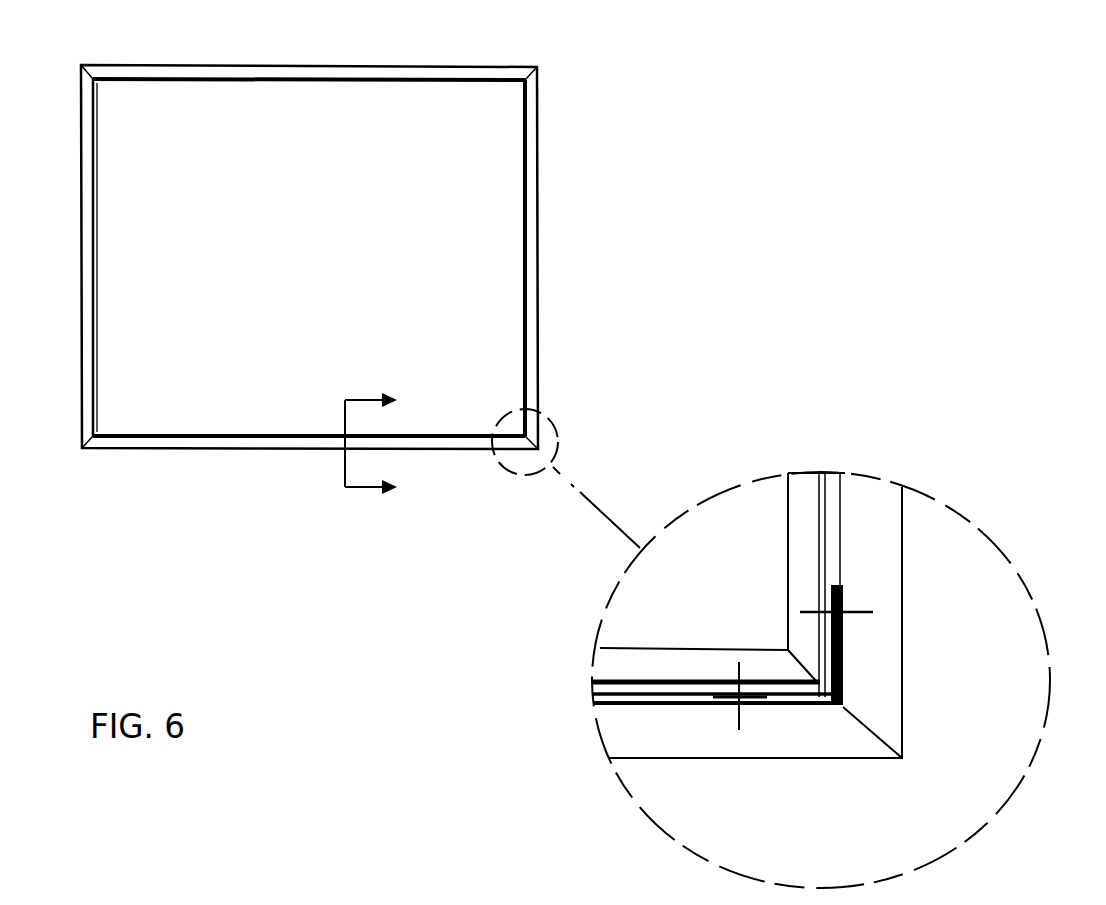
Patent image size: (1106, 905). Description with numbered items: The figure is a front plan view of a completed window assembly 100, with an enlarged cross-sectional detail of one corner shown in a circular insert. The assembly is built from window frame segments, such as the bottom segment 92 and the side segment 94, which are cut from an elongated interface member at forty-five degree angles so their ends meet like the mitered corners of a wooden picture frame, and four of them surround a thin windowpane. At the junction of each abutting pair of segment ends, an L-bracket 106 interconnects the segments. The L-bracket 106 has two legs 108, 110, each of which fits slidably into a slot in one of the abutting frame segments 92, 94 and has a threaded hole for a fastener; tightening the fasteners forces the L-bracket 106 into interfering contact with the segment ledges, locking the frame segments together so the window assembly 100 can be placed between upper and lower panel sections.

The window assembly 100 is at (568, 125).
The frame segment 94 is at (545, 283).
The frame segment 92 is at (437, 459).
The L-bracket 106 is at (848, 660).
The leg of L-bracket 108 is at (848, 597).
The leg of L-bracket 110 is at (757, 707).